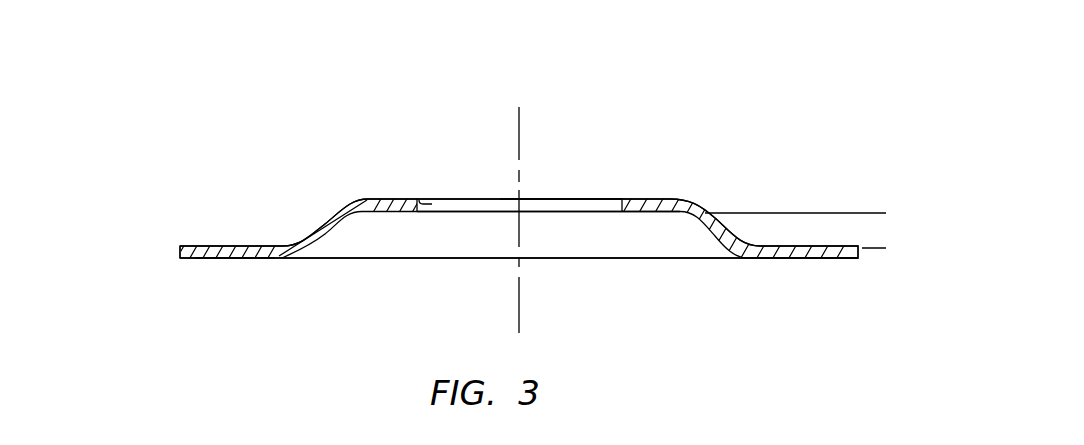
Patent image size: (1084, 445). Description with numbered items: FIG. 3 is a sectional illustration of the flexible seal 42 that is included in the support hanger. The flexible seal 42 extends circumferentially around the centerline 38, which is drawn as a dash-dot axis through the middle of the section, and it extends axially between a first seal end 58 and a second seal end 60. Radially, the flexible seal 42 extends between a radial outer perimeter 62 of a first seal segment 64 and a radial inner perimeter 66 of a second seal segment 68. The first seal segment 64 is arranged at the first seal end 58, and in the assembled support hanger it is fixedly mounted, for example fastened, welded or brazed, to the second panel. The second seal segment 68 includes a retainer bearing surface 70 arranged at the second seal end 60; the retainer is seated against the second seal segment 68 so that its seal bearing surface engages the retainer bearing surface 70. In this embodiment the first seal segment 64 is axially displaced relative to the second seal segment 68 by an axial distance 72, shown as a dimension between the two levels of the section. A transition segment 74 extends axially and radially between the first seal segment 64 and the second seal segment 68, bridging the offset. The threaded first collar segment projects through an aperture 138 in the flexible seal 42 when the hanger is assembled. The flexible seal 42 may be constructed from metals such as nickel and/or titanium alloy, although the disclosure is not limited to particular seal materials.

The centerline 38 is at (519, 124).
The flexible seal 42 is at (519, 170).
The first seal end 58 is at (444, 258).
The second seal end 60 is at (482, 199).
The radial outer perimeter 62 is at (180, 251).
The first seal segment 64 is at (235, 270).
The radial inner perimeter 66 is at (428, 199).
The second seal segment 68 is at (394, 188).
The retainer bearing surface 70 is at (645, 199).
The axial distance 72 is at (880, 257).
The transition segment 74 is at (310, 209).
The aperture 138 is at (567, 193).